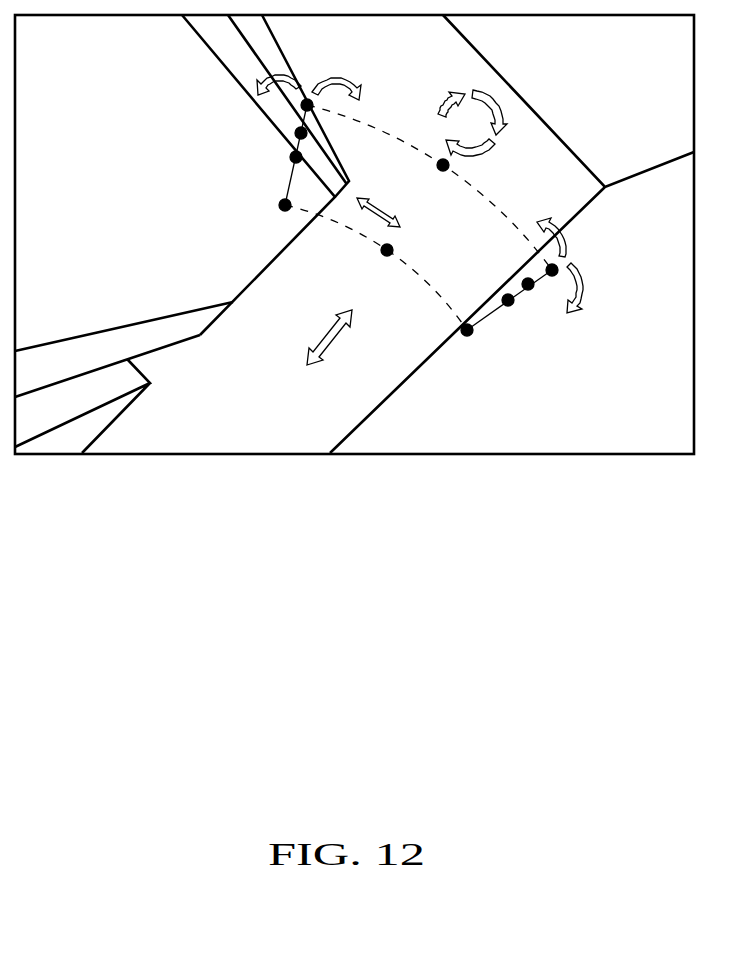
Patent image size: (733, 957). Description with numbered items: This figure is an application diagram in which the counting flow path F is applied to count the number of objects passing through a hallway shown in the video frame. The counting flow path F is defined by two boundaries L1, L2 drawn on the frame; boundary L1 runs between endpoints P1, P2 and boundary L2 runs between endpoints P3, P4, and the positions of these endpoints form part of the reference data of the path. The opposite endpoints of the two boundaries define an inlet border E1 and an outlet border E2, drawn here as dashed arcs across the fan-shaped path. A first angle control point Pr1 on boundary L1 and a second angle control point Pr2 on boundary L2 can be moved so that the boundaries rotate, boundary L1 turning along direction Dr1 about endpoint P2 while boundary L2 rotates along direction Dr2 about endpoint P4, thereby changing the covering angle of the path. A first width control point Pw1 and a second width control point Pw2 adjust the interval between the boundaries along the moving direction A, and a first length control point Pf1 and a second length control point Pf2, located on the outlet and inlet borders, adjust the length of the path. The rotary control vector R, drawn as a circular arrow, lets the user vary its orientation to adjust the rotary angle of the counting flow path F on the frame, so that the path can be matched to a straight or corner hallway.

The endpoint P1 is at (308, 99).
The endpoint P2 is at (279, 222).
The endpoint P3 is at (553, 268).
The endpoint P4 is at (467, 346).
The first angle control point Pr1 is at (300, 133).
The second angle control point Pr2 is at (544, 303).
The first width control point Pw1 is at (272, 159).
The second width control point Pw2 is at (508, 306).
The first length control point Pf1 is at (431, 183).
The second length control point Pf2 is at (374, 268).
The boundary L1 is at (291, 180).
The boundary L2 is at (487, 317).
The inlet border E1 is at (338, 225).
The outlet border E2 is at (380, 135).
The direction Dr1 is at (387, 166).
The direction Dr2 is at (472, 183).
The rotary control vector R is at (472, 123).
The moving direction A is at (378, 202).
The counting flow path F is at (452, 250).